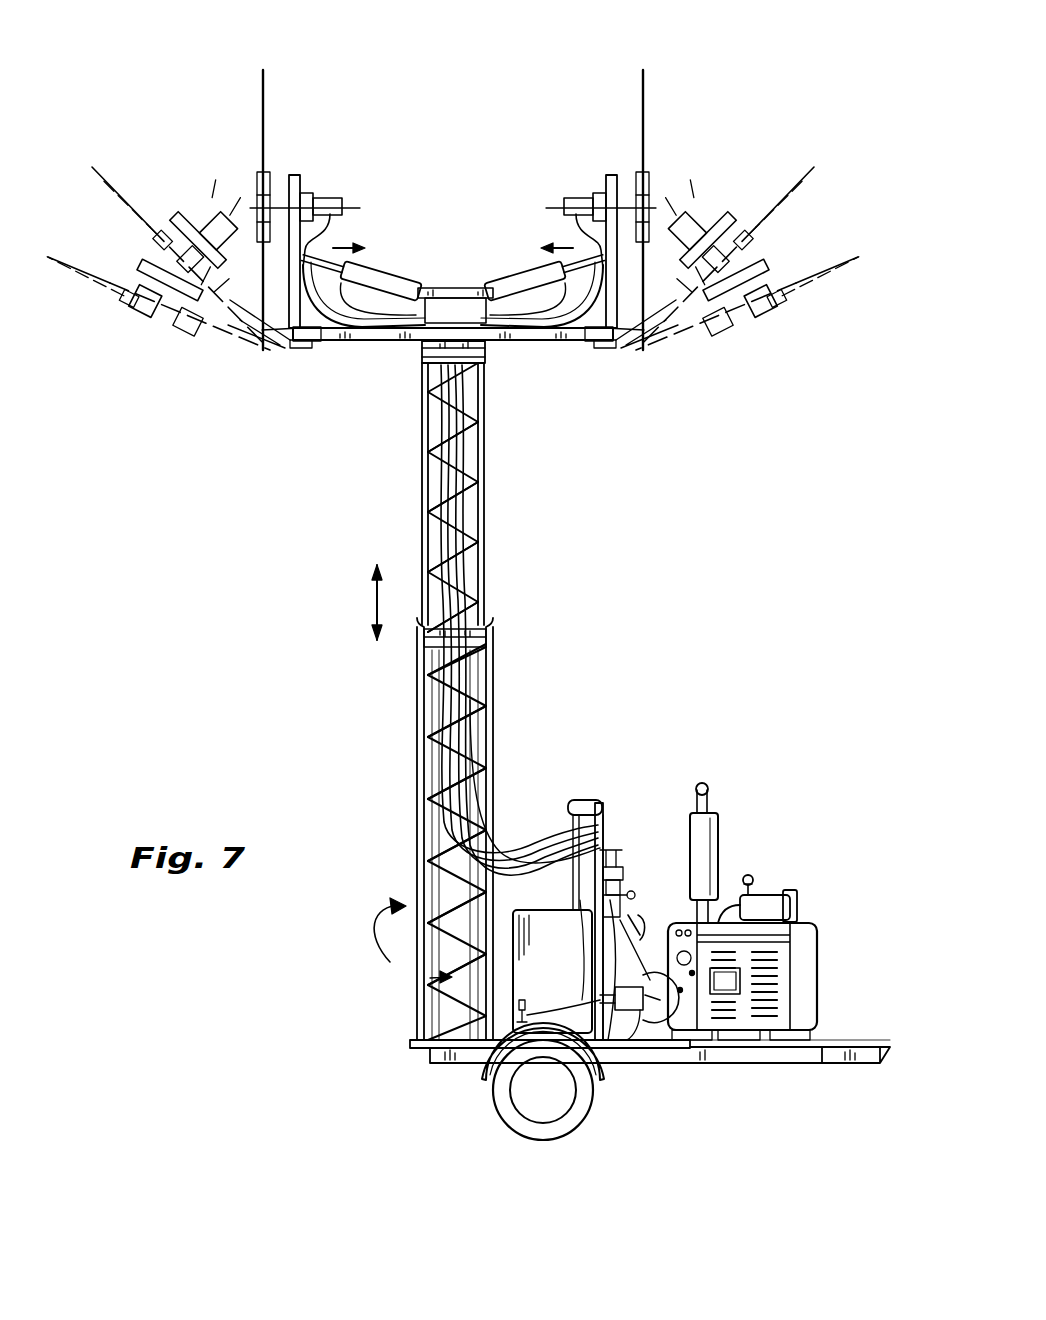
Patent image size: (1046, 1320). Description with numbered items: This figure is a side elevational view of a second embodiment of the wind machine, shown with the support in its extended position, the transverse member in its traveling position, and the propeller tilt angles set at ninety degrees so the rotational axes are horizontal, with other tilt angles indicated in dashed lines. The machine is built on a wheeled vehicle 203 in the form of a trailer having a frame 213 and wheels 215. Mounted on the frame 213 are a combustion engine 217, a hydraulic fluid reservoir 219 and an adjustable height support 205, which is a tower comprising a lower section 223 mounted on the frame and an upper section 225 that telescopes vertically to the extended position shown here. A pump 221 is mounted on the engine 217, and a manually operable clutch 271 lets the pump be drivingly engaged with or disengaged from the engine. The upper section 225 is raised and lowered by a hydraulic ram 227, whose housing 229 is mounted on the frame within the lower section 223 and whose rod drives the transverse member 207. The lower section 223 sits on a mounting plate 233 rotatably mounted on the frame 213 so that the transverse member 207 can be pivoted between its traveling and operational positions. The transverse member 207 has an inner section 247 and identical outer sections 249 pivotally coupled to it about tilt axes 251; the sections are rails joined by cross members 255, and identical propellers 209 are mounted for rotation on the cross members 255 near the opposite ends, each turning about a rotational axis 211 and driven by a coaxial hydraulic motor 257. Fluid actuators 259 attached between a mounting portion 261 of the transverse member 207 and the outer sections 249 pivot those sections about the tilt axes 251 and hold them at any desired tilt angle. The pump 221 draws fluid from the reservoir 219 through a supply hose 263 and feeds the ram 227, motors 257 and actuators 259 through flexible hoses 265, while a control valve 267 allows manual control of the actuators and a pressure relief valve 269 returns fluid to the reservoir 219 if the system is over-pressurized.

The wheeled vehicle 203 is at (437, 1065).
The adjustable height support 205 is at (416, 722).
The transverse member 207 is at (563, 345).
The propellers 209 is at (267, 97).
The rotational axes 211 is at (240, 208).
The frame 213 is at (852, 1063).
The wheels 215 is at (515, 1133).
The combustion engine 217 is at (815, 972).
The hydraulic fluid reservoir 219 is at (575, 991).
The pump 221 is at (638, 1043).
The lower section 223 is at (418, 780).
The upper section 225 is at (425, 493).
The hydraulic ram 227 is at (448, 888).
The housing 229 is at (450, 977).
The mounting plate 233 is at (410, 1043).
The inner section 247 is at (368, 345).
The outer sections 249 is at (275, 345).
The tilt axes 251 is at (298, 345).
The cross members 255 is at (288, 205).
The hydraulic motors 257 is at (335, 200).
The fluid actuators 259 is at (398, 268).
The mounting portion 261 is at (472, 288).
The supply hose 263 is at (565, 1065).
The flexible hoses 265 is at (528, 835).
The control valve 267 is at (623, 870).
The pressure relief valve 269 is at (633, 892).
The clutch 271 is at (660, 1010).